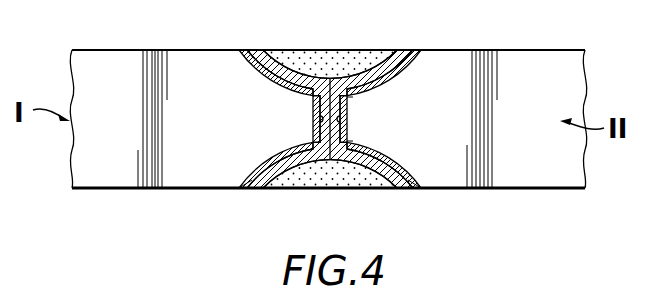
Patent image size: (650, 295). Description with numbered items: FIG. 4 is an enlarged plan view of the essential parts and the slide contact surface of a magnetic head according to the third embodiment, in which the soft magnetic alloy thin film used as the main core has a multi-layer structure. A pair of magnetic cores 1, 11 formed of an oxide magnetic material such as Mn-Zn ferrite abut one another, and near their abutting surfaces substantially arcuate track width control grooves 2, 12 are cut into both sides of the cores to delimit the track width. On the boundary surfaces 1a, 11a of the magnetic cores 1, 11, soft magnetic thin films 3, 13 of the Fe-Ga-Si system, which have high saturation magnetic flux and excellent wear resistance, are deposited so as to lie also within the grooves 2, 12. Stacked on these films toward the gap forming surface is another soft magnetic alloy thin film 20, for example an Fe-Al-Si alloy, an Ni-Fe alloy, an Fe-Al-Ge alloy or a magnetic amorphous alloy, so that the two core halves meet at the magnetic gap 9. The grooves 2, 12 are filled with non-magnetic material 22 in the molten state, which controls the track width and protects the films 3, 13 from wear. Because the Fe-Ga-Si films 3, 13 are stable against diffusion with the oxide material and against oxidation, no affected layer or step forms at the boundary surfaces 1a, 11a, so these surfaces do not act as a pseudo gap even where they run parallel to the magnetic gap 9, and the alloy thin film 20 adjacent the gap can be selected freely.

The magnetic core 1 is at (124, 64).
The magnetic core 11 is at (530, 70).
The boundary surface 1a is at (312, 122).
The boundary surface 11a is at (348, 121).
The track width control groove 2 is at (247, 187).
The track width control groove 12 is at (403, 187).
The soft magnetic thin film 3 is at (253, 52).
The soft magnetic thin film 13 is at (408, 54).
The soft magnetic alloy thin film 20 is at (268, 62).
The non-magnetic material 22 is at (329, 60).
The magnetic gap 9 is at (320, 160).